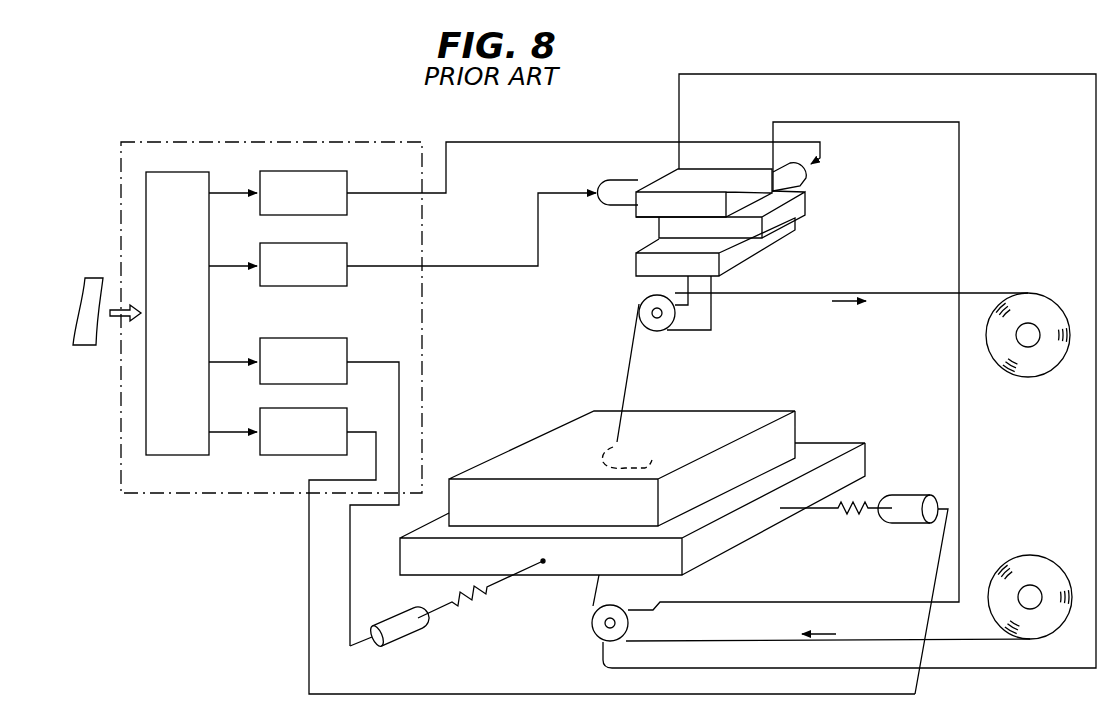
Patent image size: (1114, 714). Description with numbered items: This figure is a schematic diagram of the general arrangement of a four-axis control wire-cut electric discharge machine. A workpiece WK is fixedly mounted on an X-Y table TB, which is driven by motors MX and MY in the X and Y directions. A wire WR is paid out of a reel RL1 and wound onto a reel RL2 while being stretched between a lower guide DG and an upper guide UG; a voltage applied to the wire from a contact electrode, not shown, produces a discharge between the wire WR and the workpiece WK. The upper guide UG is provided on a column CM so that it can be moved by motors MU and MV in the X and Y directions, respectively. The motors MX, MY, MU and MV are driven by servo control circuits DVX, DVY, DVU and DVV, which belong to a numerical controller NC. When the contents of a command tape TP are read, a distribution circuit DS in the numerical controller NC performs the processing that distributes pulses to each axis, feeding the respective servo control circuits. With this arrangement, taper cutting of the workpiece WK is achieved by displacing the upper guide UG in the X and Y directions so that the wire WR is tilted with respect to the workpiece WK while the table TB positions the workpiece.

The numerical controller NC is at (310, 142).
The distribution circuit DS is at (177, 313).
The servo control circuit DVV is at (514, 178).
The servo control circuit DVU is at (402, 239).
The servo control circuit DVY is at (304, 492).
The servo control circuit DVX is at (562, 551).
The command tape TP is at (77, 346).
The motor MU is at (633, 178).
The motor MV is at (808, 178).
The column CM is at (959, 197).
The upper guide UG is at (657, 332).
The wire WR is at (630, 358).
The workpiece WK is at (756, 411).
The X-Y table TB is at (838, 443).
The motor MX is at (913, 495).
The reel RL2 is at (1030, 378).
The reel RL1 is at (1030, 555).
The lower guide DG is at (592, 634).
The motor MY is at (410, 633).